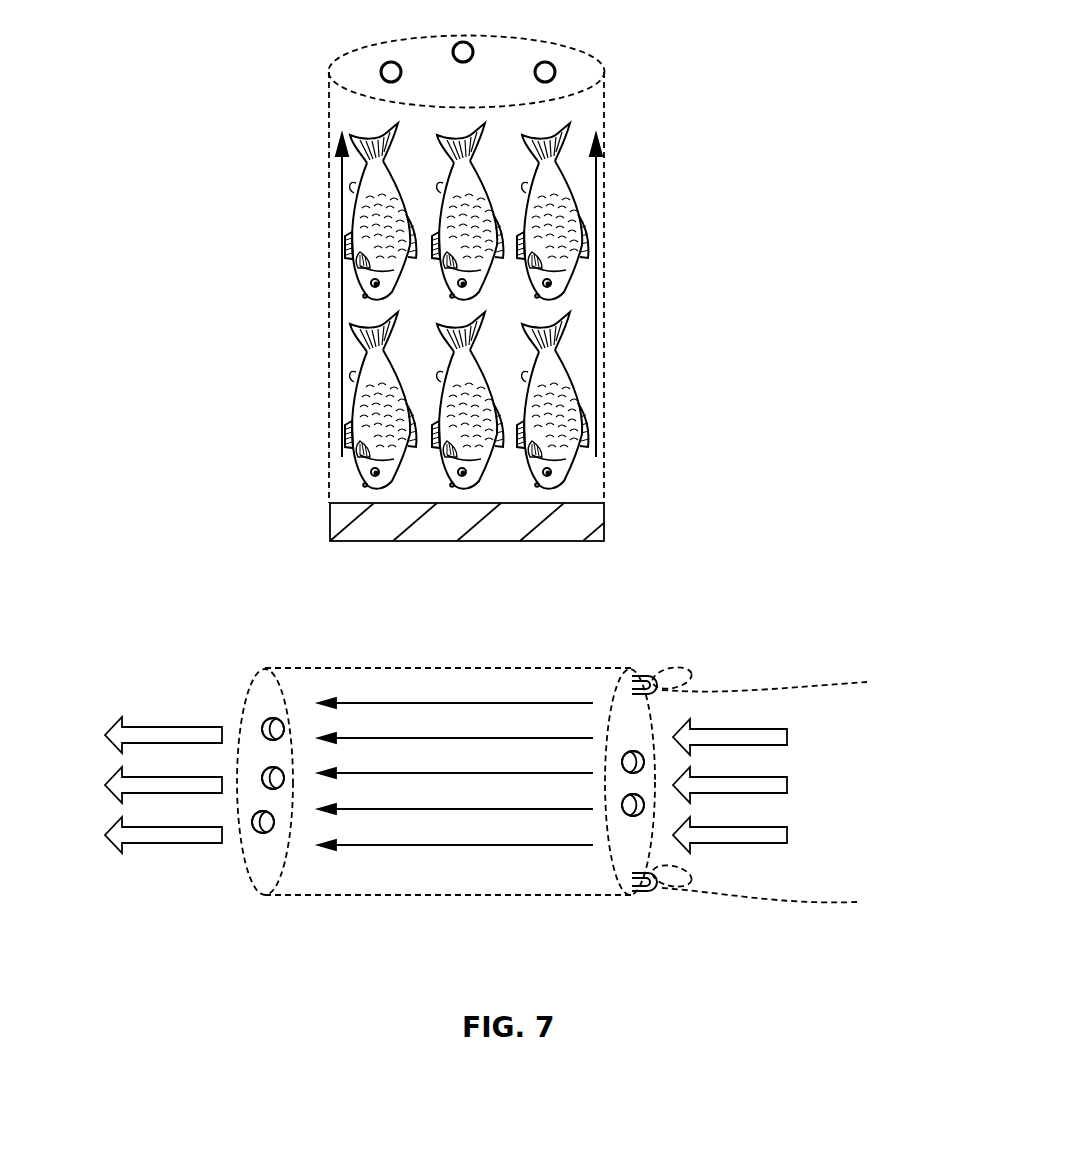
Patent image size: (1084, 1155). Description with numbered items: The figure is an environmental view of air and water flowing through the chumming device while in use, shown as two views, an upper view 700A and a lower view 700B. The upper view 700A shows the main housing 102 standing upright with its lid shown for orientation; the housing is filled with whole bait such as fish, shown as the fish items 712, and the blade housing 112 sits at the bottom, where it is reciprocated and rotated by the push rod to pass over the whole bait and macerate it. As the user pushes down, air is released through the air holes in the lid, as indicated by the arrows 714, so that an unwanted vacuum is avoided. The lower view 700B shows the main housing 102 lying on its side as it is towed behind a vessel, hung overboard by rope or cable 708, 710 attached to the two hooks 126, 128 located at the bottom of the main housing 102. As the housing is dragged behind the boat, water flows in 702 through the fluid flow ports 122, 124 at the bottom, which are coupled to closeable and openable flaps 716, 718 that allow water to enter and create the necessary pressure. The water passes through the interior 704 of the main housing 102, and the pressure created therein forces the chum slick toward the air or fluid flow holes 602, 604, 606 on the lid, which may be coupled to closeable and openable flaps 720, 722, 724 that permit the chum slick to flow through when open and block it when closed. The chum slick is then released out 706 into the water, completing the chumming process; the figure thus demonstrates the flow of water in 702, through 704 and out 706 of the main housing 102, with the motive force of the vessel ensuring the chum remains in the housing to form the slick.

The top view of the chumming device in use 700A is at (730, 35).
The side view of the chumming device being towed 700B is at (883, 667).
The blade housing 112 is at (329, 518).
The food items (fish) 712 is at (558, 172).
The arrow showing air released 714 is at (598, 379).
The main housing 102 is at (460, 897).
The interior of the main housing 704 is at (597, 663).
The water flow out 706 is at (105, 718).
The water flow in 702 is at (805, 718).
The closeable and openable flap 720 is at (262, 729).
The closeable and openable flap 722 is at (262, 780).
The closeable and openable flap 724 is at (262, 832).
The air flow hole 602 is at (270, 718).
The air flow hole 604 is at (280, 790).
The air flow hole 606 is at (263, 833).
The closeable and openable flap 716 is at (622, 762).
The closeable and openable flap 718 is at (622, 805).
The fluid flow port 122 is at (636, 750).
The fluid flow port 124 is at (635, 817).
The hook 128 is at (648, 673).
The hook 126 is at (647, 893).
The rope or cable 708 is at (782, 682).
The rope or cable 710 is at (752, 897).